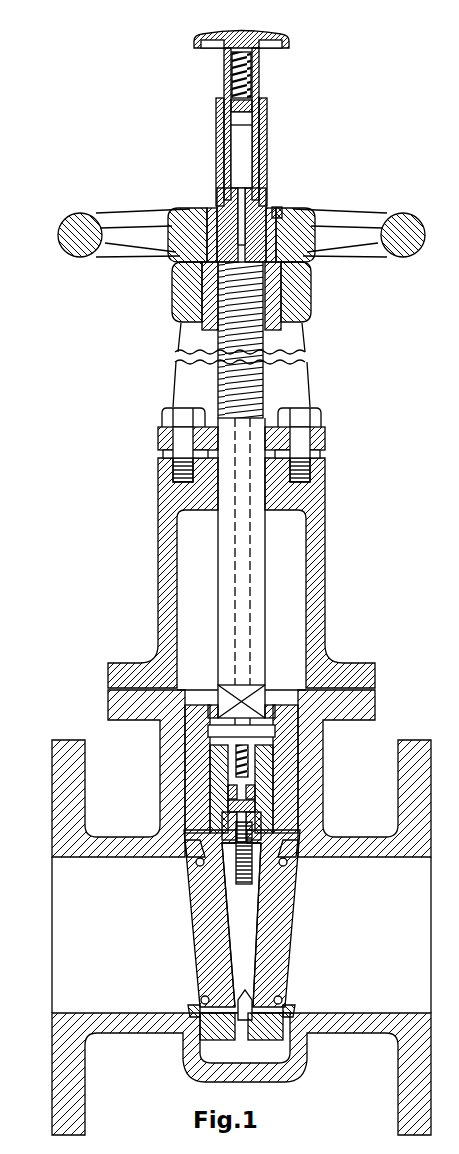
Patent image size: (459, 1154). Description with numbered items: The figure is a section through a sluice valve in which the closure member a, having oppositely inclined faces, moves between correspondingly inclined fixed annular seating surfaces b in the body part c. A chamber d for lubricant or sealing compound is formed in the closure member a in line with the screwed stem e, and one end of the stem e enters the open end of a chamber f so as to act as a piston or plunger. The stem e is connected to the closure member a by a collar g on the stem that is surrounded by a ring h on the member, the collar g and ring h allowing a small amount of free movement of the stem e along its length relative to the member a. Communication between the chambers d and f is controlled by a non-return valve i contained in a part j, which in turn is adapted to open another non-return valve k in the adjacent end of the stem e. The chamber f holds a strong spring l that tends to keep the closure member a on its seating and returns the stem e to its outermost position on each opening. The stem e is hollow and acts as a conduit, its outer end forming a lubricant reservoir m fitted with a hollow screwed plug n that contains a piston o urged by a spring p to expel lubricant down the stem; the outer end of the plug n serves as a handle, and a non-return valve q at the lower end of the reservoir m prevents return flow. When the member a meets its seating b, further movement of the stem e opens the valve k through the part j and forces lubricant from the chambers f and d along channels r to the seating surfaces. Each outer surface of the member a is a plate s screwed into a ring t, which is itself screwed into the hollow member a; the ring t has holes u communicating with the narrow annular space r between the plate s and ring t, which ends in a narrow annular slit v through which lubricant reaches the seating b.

The closure member a is at (248, 1040).
The annular seating surfaces b is at (198, 1013).
The body part c is at (358, 828).
The chamber d is at (255, 933).
The screwed stem e is at (264, 617).
The chamber f is at (256, 818).
The collar g is at (276, 733).
The ring h is at (282, 705).
The non-return valve i is at (233, 840).
The part j is at (195, 893).
The non-return valve k is at (210, 777).
The strong spring l is at (256, 800).
The lubricant reservoir m is at (251, 163).
The hollow screwed plug n is at (251, 75).
The piston o is at (251, 112).
The spring p is at (231, 73).
The non-return valve q is at (193, 267).
The channels r is at (196, 862).
The plate s is at (200, 950).
The ring t is at (200, 1053).
The holes u is at (253, 1000).
The annular slit v is at (187, 847).